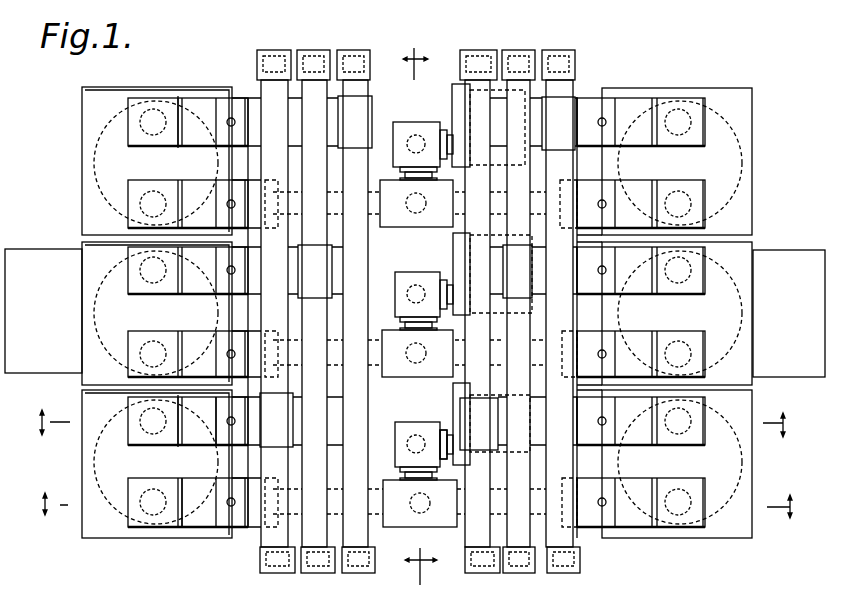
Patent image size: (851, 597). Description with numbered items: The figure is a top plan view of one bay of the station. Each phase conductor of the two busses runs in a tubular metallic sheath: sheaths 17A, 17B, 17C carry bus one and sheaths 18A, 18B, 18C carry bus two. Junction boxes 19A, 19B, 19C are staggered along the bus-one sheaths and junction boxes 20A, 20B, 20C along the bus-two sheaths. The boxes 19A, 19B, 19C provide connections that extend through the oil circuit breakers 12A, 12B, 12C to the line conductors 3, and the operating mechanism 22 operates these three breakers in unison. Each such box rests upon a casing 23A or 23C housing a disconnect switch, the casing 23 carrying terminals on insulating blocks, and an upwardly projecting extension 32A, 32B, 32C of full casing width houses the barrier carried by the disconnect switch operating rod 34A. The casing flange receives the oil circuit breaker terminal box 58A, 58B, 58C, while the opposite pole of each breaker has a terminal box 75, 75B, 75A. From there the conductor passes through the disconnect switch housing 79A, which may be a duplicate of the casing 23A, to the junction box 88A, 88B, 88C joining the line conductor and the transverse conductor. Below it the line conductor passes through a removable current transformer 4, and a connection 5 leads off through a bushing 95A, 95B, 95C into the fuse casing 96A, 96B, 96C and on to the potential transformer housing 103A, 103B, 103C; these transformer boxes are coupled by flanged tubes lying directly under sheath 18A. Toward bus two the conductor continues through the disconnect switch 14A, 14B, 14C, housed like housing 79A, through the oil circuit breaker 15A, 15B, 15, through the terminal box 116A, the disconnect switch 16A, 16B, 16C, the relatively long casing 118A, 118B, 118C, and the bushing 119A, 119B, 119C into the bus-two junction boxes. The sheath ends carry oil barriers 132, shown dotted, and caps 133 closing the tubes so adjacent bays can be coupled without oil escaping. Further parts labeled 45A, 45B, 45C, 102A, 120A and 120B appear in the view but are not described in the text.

The oil circuit breaker 12C is at (95, 142).
The oil circuit breaker 12B is at (97, 288).
The oil circuit breaker 12A is at (97, 457).
The oil circuit breaker terminal box 58C is at (147, 140).
The oil circuit breaker terminal box 58B is at (148, 290).
The oil circuit breaker terminal box 58A is at (142, 440).
The extension 32C is at (227, 135).
The extension 32B is at (227, 285).
The extension 32A is at (223, 442).
The left lower carrier block C 45C is at (222, 190).
The left lower carrier block B 45B is at (222, 338).
The left lower carrier block A 45A is at (230, 518).
The casing 23C is at (188, 100).
The casing 23A is at (196, 432).
The disconnect switch operating rod 34A is at (224, 430).
The disconnect switch housing 79A is at (197, 488).
The terminal box 75 is at (132, 220).
The terminal box 75B is at (143, 327).
The terminal box 75A is at (133, 487).
The operating mechanism 22 is at (22, 249).
The casing 23 is at (785, 252).
The tubular sheath 17A is at (262, 92).
The tubular sheath 17B is at (311, 88).
The tubular sheath 17C is at (351, 84).
The tubular sheath 18A is at (474, 93).
The tubular sheath 18B is at (512, 88).
The tubular sheath 18C is at (572, 66).
The oil barrier 132 is at (275, 50).
The cap 133 is at (478, 50).
The junction box 19A is at (267, 443).
The junction box 19B is at (315, 271).
The junction box 19C is at (361, 107).
The junction box 20A is at (470, 420).
The junction box 20B is at (510, 271).
The junction box 20C is at (558, 123).
The fuse box 96A is at (400, 432).
The fuse box 96B is at (402, 280).
The fuse box 96C is at (402, 128).
The bushing 95A is at (422, 475).
The bushing 95B is at (410, 327).
The bushing 95C is at (404, 175).
The junction box 88A is at (413, 512).
The junction box 88B is at (397, 365).
The junction box 88C is at (392, 215).
The potential transformer housing 103A is at (458, 394).
The potential transformer housing 103B is at (458, 258).
The potential transformer housing 103C is at (460, 98).
The motor flange A 102A is at (450, 424).
The oil circuit breaker 15 is at (738, 140).
The oil circuit breaker 15B is at (733, 300).
The oil circuit breaker 15A is at (722, 508).
The disconnect switch 16C is at (603, 108).
The disconnect switch 16B is at (605, 283).
The disconnect switch 16A is at (608, 435).
The disconnect switch 14C is at (610, 188).
The disconnect switch 14B is at (608, 342).
The disconnect switch 14A is at (600, 520).
The casing 118C is at (583, 97).
The casing 118B is at (578, 253).
The casing 118A is at (580, 405).
The bushing 119C is at (581, 183).
The bushing 119B is at (587, 323).
The bushing 119A is at (582, 490).
The right lower spindle B 120B is at (702, 324).
The right lower spindle A 120A is at (697, 483).
The terminal box 116A is at (702, 413).
The connection 5 is at (420, 311).
The current transformer 4 is at (410, 423).
The line conductor 3 is at (415, 505).